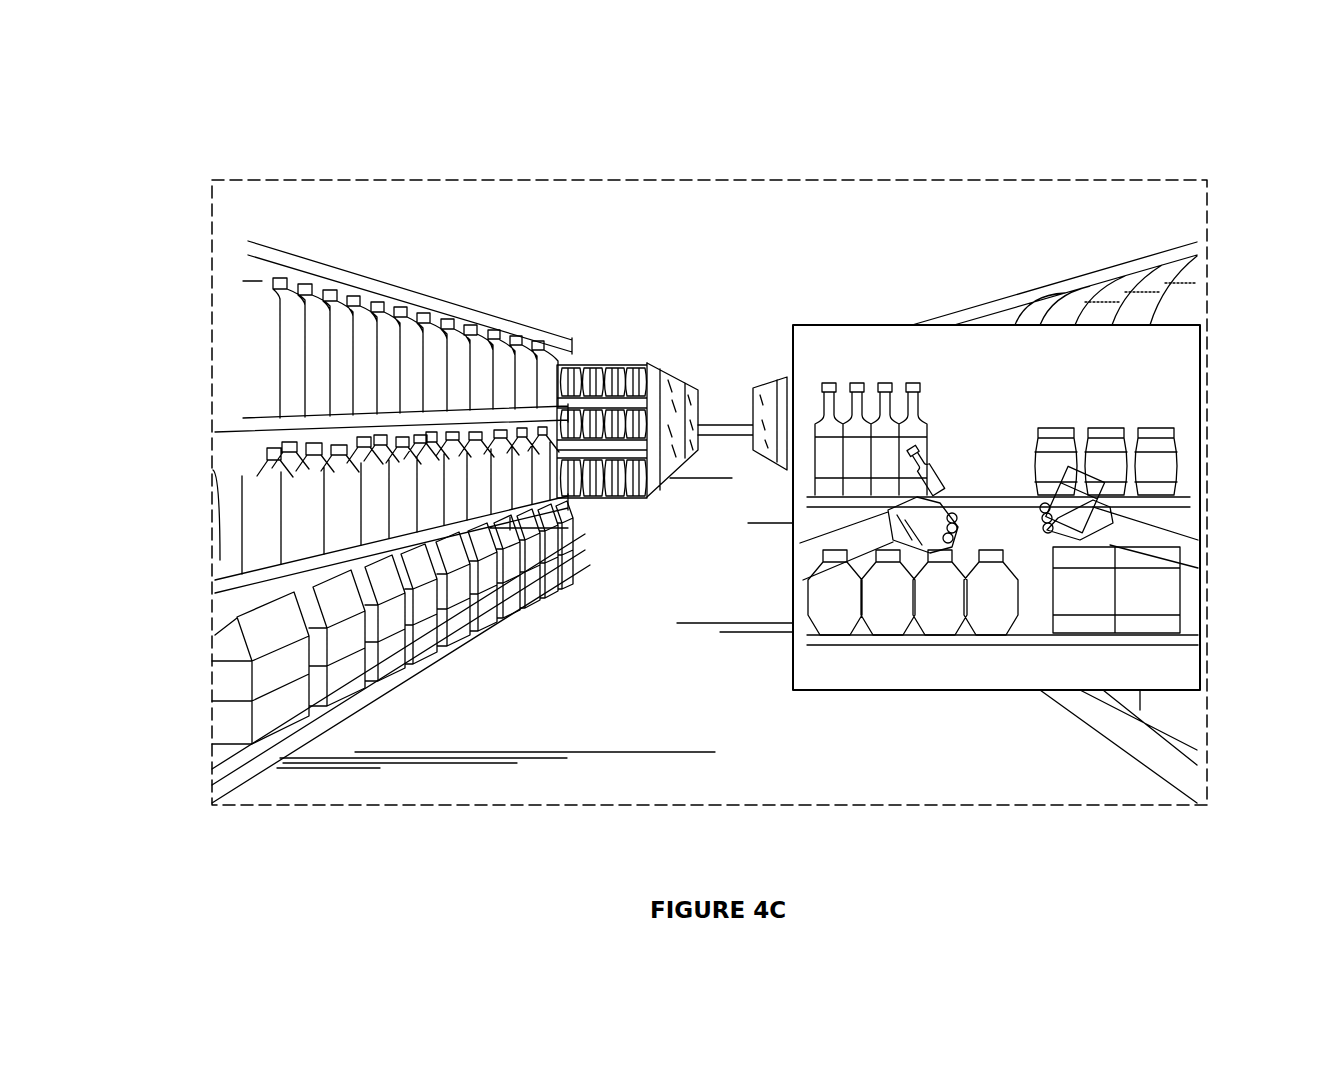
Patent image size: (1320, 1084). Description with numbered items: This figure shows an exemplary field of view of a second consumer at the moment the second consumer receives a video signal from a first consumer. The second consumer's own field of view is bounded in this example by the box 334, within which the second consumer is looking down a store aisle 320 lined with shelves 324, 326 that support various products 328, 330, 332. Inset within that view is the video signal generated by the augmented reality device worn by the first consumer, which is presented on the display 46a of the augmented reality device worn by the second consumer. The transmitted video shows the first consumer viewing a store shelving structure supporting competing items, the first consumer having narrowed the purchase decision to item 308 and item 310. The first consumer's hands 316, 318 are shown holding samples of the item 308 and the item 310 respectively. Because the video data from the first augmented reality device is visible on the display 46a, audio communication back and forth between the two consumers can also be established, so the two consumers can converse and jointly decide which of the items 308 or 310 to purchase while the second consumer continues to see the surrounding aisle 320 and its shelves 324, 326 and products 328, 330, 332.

The box 334 is at (905, 178).
The display 46a is at (1049, 325).
The item 310 is at (1083, 480).
The item 308 is at (887, 385).
The hand 316 is at (925, 545).
The hand 318 is at (1095, 500).
The aisle 320 is at (620, 650).
The shelf 324 is at (568, 480).
The shelf 326 is at (592, 362).
The product 328 is at (447, 637).
The product 330 is at (258, 525).
The product 332 is at (523, 363).